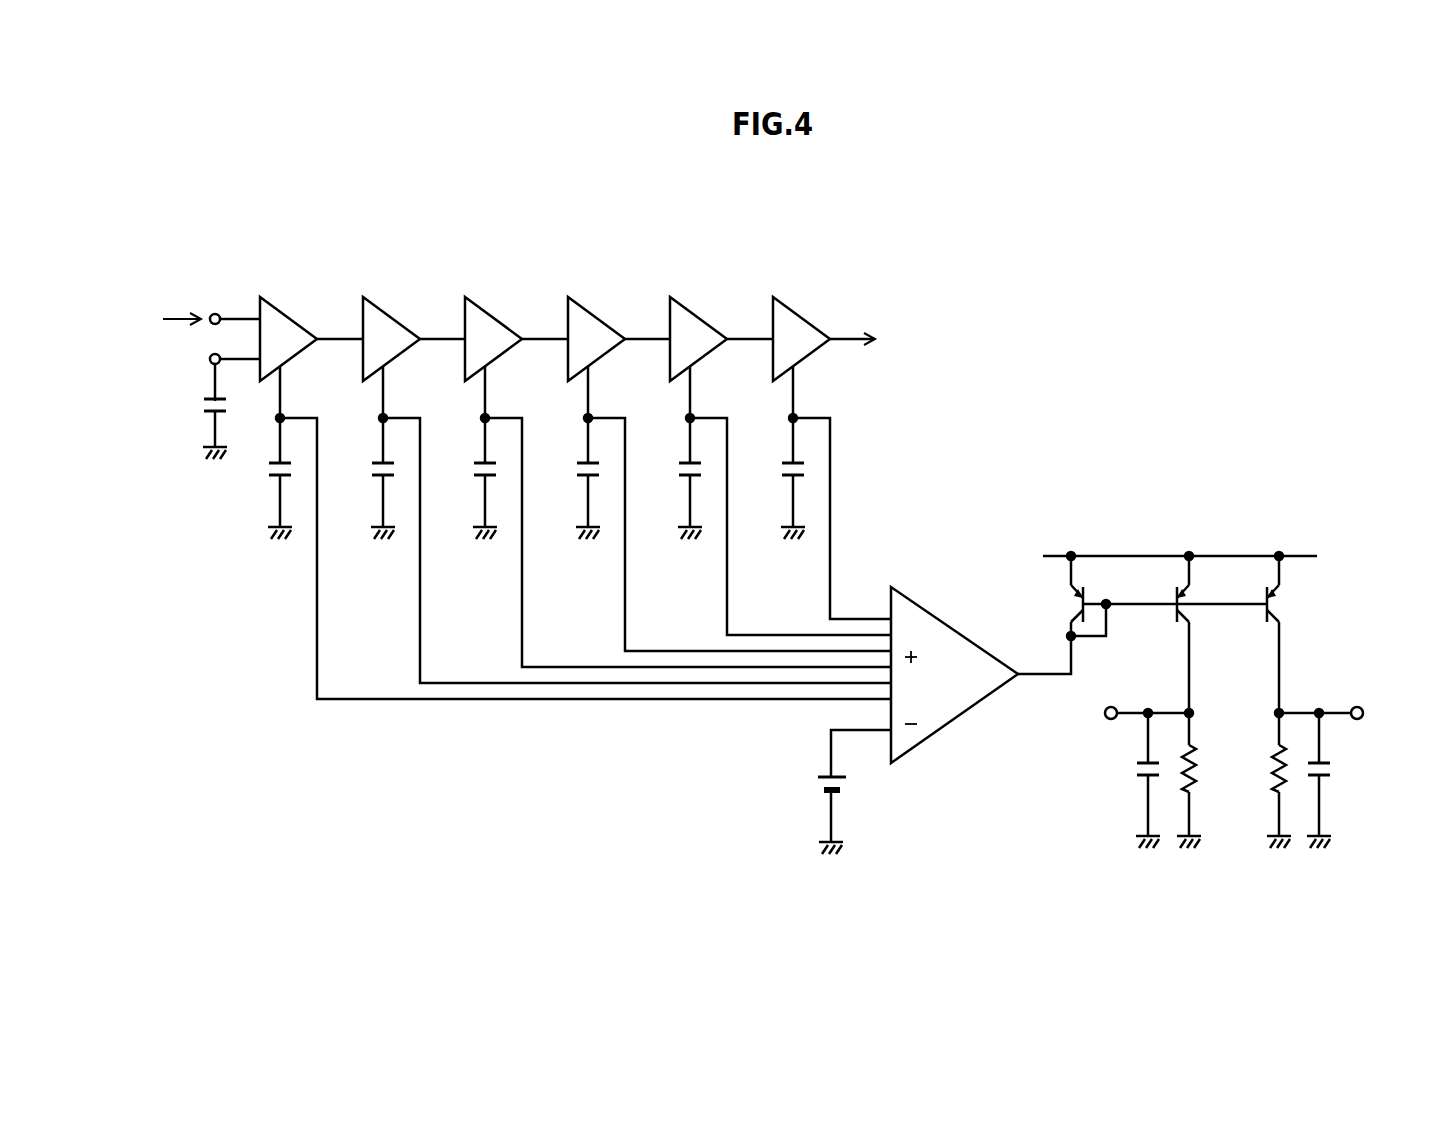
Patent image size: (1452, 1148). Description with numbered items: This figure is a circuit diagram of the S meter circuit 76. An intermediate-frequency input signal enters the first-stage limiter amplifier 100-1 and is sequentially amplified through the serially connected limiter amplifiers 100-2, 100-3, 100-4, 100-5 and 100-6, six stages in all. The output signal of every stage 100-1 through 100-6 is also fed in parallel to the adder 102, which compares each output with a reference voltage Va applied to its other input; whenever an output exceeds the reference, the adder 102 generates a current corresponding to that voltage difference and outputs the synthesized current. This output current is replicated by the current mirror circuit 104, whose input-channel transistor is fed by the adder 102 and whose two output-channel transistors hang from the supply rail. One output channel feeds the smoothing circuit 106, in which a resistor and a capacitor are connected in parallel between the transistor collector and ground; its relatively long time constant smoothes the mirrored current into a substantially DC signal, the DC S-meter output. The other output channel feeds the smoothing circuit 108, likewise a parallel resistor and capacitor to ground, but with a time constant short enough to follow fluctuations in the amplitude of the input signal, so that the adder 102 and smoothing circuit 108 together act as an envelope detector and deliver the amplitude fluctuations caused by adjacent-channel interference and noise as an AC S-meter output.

The S meter circuit 76 is at (1113, 358).
The first-stage limiter amplifier 100-1 is at (290, 307).
The limiter amplifier 100-2 is at (393, 307).
The limiter amplifier 100-3 is at (495, 307).
The limiter amplifier 100-4 is at (598, 307).
The limiter amplifier 100-5 is at (700, 307).
The limiter amplifier 100-6 is at (803, 307).
The adder 102 is at (932, 608).
The current mirror circuit 104 is at (1124, 538).
The smoothing circuit 106 is at (1125, 815).
The smoothing circuit 108 is at (1335, 820).